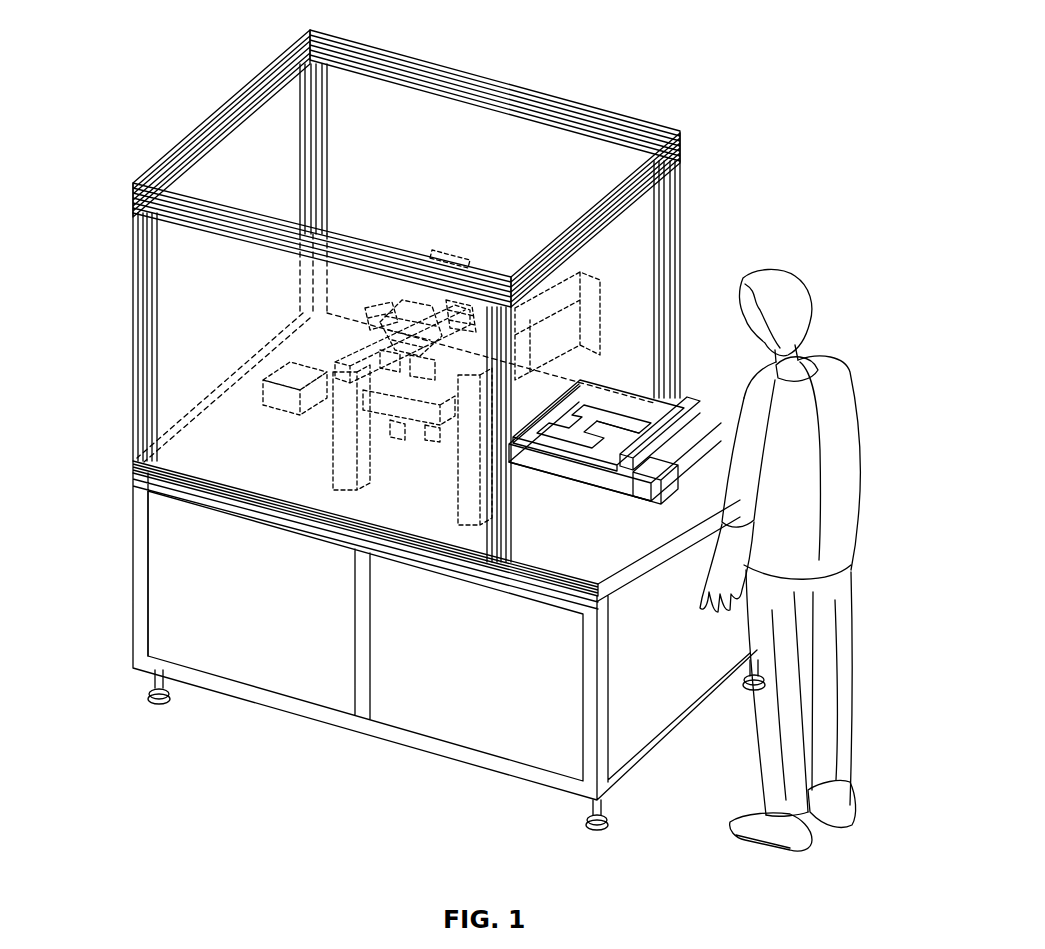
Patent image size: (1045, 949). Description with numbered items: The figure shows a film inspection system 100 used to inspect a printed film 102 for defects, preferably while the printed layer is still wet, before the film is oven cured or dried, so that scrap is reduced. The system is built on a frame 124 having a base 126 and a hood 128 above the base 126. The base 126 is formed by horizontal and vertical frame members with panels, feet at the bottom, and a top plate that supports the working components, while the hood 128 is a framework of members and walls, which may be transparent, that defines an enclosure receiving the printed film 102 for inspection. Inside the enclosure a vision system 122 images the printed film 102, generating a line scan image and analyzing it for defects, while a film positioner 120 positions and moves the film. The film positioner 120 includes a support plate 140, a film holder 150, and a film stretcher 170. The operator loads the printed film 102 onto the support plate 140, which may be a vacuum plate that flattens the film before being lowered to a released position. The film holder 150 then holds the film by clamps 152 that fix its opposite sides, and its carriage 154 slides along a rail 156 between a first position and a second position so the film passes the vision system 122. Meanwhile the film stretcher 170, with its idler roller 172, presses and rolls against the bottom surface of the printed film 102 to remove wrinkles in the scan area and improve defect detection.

The film inspection system 100 is at (652, 78).
The printed film 102 is at (643, 417).
The film positioner 120 is at (582, 492).
The vision system 122 is at (426, 345).
The frame 124 is at (130, 562).
The base 126 is at (252, 638).
The hood 128 is at (130, 266).
The support plate 140 is at (593, 563).
The film holder 150 is at (640, 438).
The clamps 152 is at (658, 402).
The carriage 154 is at (662, 474).
The rail 156 is at (647, 503).
The film stretcher 170 is at (427, 440).
The idler roller 172 is at (437, 448).